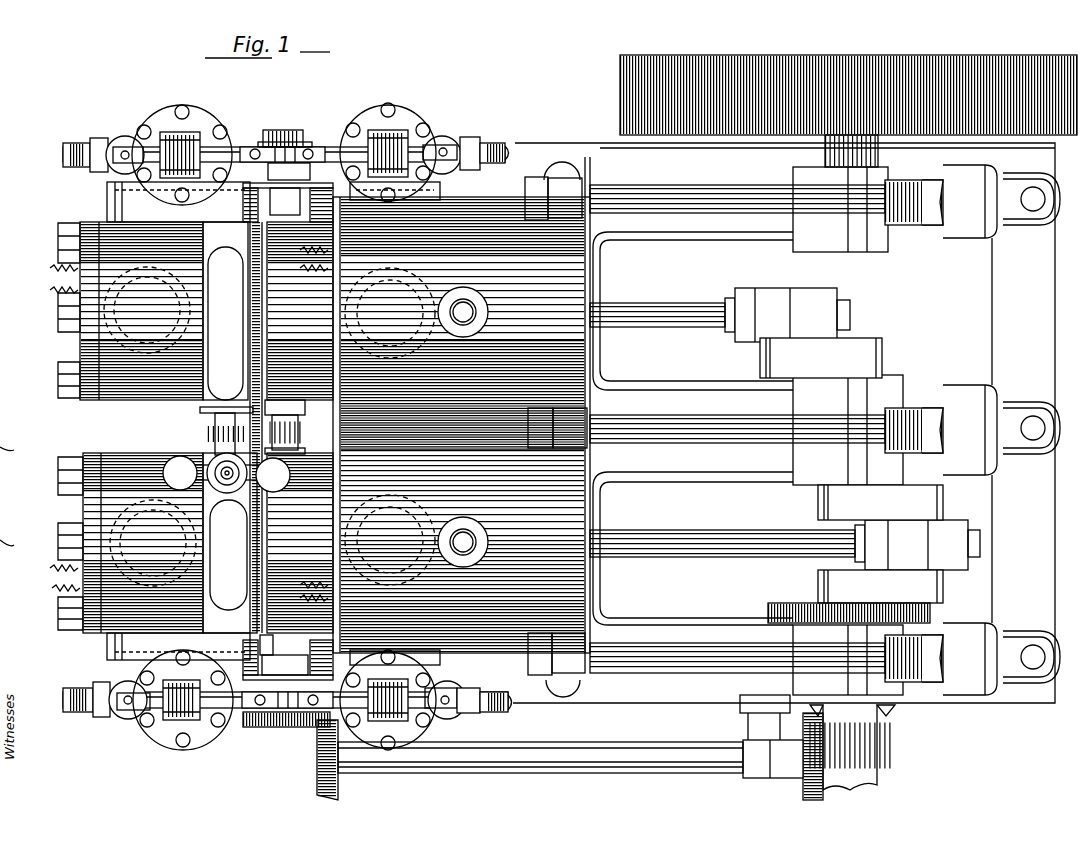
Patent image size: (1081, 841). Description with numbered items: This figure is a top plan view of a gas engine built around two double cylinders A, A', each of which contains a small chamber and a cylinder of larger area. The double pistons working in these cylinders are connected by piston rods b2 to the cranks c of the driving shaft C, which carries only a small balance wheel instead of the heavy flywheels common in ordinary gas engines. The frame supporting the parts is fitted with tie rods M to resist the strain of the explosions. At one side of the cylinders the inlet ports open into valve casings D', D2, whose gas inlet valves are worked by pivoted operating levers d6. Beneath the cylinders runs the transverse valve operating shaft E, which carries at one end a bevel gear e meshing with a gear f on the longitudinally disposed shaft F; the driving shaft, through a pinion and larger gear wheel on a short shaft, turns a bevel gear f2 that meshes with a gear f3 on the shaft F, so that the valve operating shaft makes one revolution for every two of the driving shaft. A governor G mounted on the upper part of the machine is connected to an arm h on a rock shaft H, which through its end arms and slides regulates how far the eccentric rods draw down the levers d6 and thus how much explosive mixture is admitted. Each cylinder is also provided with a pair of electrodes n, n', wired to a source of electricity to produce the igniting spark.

The driving shaft C is at (887, 153).
The tie rods M is at (668, 203).
The piston rods b2 is at (657, 323).
The cranks c is at (782, 352).
The bevel gear f2 is at (893, 712).
The gear f3 is at (803, 788).
The longitudinally disposed shaft F is at (540, 773).
The gear f is at (317, 760).
The bevel gear e is at (262, 724).
The operating lever d6 is at (213, 153).
The valve casing D' is at (177, 427).
The valve casing D2 is at (405, 110).
The arm h is at (273, 200).
The double cylinder A is at (169, 311).
The double cylinder A' is at (166, 543).
The rock shaft H is at (265, 325).
The governor G is at (200, 462).
The valve operating shaft E is at (296, 438).
The electrode n is at (174, 410).
The electrode n' is at (195, 435).